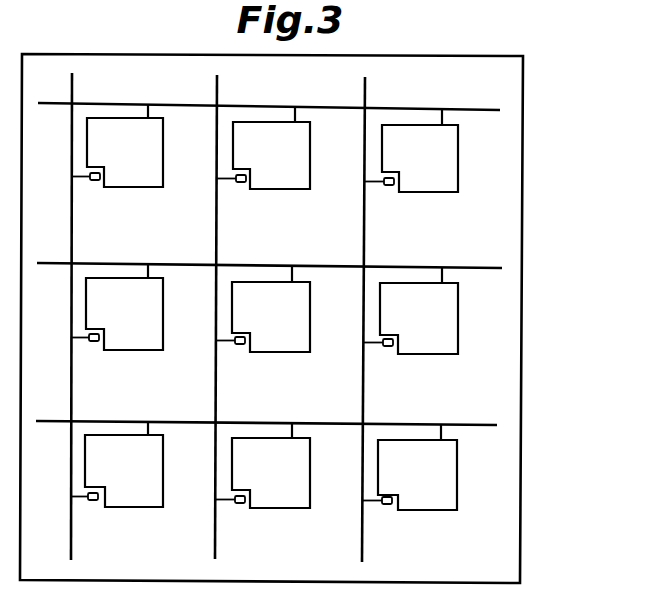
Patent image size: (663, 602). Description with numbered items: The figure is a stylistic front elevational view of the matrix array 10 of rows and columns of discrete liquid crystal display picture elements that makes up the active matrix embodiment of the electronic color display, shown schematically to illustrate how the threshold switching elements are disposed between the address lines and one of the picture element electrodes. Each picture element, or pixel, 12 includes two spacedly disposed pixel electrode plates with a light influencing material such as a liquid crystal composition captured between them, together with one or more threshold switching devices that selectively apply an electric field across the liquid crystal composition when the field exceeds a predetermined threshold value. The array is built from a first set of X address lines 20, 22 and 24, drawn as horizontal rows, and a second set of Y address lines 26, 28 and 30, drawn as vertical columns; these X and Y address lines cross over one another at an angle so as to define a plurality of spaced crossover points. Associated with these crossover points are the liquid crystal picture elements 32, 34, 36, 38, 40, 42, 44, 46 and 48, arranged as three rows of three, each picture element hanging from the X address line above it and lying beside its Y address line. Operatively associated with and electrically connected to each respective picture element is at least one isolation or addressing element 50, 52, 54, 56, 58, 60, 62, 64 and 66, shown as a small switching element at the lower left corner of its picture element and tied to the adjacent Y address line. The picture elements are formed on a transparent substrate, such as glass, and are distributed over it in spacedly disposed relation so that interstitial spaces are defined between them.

The matrix array 10 is at (558, 63).
The picture element 12 is at (492, 173).
The X address line 20 is at (484, 109).
The X address line 22 is at (484, 266).
The X address line 24 is at (480, 424).
The Y address line 26 is at (72, 91).
The Y address line 28 is at (217, 93).
The Y address line 30 is at (365, 95).
The liquid crystal picture element 32 is at (111, 150).
The liquid crystal picture element 34 is at (257, 154).
The liquid crystal picture element 36 is at (406, 157).
The liquid crystal picture element 38 is at (110, 310).
The liquid crystal picture element 40 is at (257, 314).
The liquid crystal picture element 42 is at (405, 315).
The liquid crystal picture element 44 is at (110, 467).
The liquid crystal picture element 46 is at (257, 470).
The liquid crystal picture element 48 is at (403, 472).
The isolation or addressing element 50 is at (95, 180).
The isolation or addressing element 52 is at (241, 182).
The isolation or addressing element 54 is at (389, 185).
The isolation or addressing element 56 is at (94, 341).
The isolation or addressing element 58 is at (240, 344).
The isolation or addressing element 60 is at (388, 346).
The isolation or addressing element 62 is at (93, 500).
The isolation or addressing element 64 is at (240, 503).
The isolation or addressing element 66 is at (387, 504).